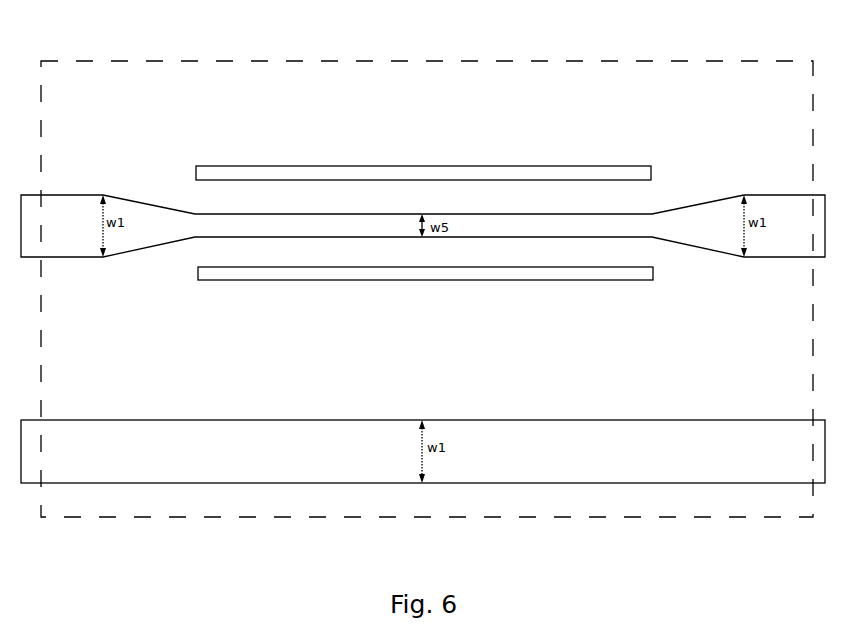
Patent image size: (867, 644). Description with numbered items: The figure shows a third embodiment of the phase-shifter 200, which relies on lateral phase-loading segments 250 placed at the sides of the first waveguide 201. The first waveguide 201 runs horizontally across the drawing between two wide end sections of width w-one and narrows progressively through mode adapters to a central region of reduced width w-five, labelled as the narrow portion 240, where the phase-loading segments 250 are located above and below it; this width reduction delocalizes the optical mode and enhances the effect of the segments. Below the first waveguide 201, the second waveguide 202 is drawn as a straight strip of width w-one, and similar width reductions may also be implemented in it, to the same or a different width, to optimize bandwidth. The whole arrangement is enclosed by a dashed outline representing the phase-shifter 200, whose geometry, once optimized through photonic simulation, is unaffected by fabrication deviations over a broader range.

The phase-shifter 200 is at (498, 60).
The first waveguide 201 is at (48, 195).
The second waveguide 202 is at (60, 420).
The narrow signal trace 240 is at (532, 215).
The phase-loading segments 250 is at (532, 167).